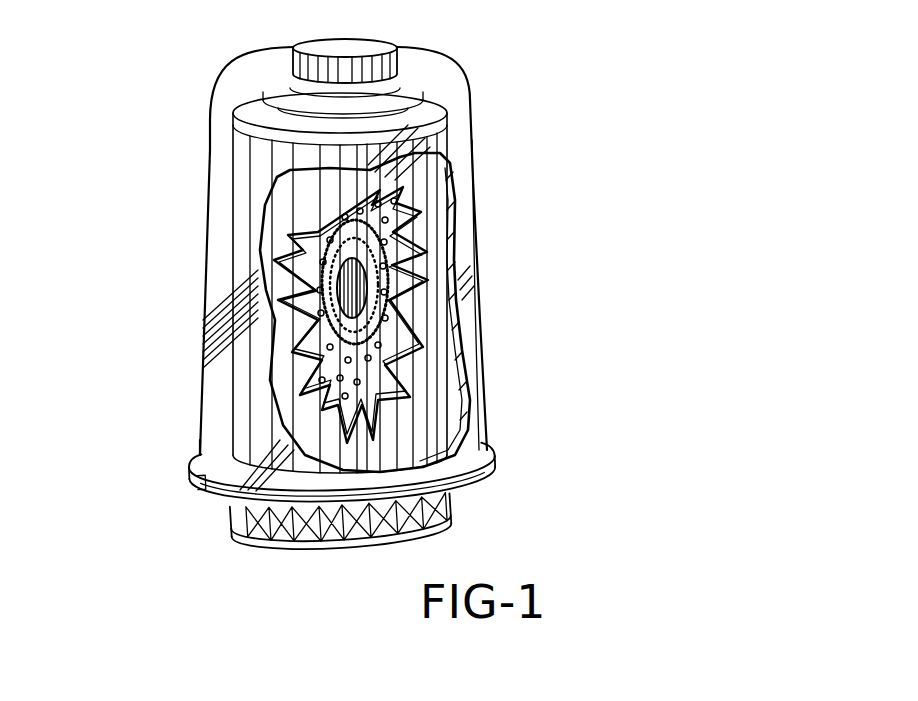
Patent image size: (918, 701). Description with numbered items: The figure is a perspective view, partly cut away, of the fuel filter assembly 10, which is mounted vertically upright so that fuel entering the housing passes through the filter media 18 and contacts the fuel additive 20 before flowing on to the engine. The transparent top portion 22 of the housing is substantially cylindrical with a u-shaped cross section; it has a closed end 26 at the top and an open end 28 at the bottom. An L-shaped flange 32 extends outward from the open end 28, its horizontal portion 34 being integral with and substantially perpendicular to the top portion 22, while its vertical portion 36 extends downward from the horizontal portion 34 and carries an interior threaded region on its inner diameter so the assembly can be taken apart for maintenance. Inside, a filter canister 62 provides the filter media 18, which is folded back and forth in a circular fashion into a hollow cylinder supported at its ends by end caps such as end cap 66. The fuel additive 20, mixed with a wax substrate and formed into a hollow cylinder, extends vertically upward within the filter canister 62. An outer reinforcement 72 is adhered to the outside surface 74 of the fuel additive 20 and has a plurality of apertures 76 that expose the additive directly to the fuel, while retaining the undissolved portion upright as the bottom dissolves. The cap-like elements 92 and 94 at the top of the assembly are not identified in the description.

The fuel filter assembly 10 is at (436, 295).
The filter media 18 is at (420, 303).
The fuel additive 20 is at (395, 252).
The top portion 22 is at (473, 137).
The closed end 26 is at (453, 73).
The open end 28 is at (470, 482).
The L-shaped flange 32 is at (193, 460).
The horizontal portion 34 is at (192, 468).
The vertical portion 36 is at (200, 498).
The filter canister 62 is at (266, 555).
The end cap 66 is at (307, 540).
The outer reinforcement 72 is at (405, 215).
The outside surface 74 is at (340, 300).
The apertures 76 is at (330, 214).
The fill cap 92 is at (305, 42).
The neck 94 is at (262, 70).